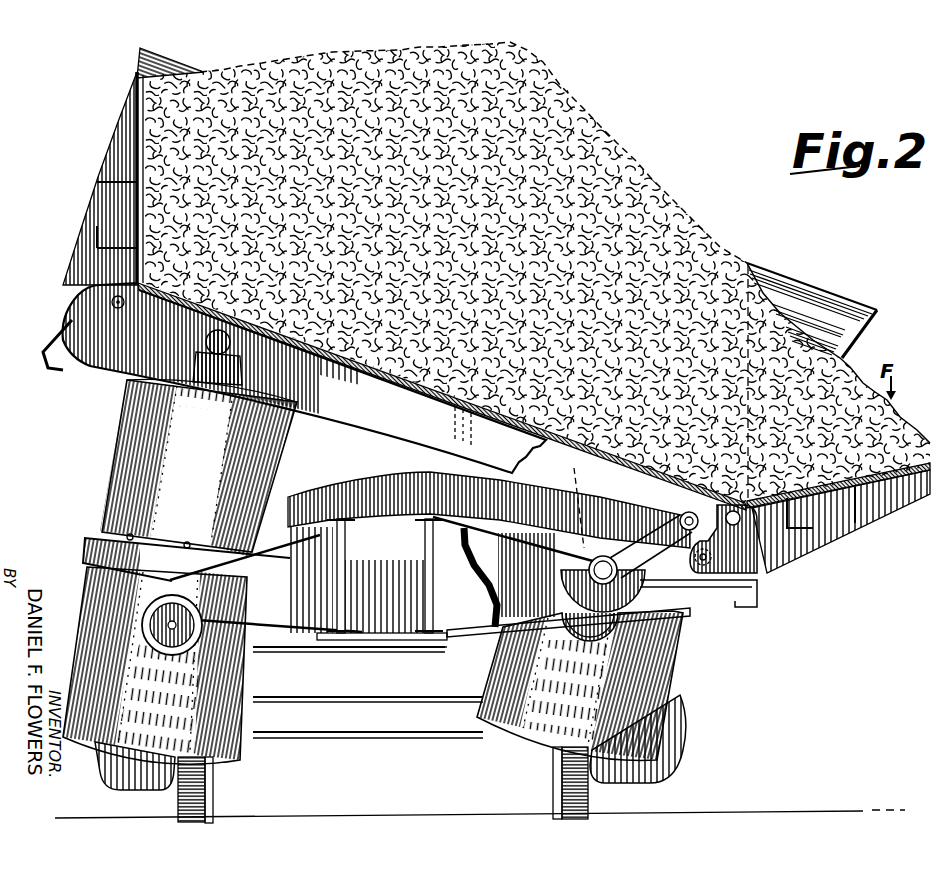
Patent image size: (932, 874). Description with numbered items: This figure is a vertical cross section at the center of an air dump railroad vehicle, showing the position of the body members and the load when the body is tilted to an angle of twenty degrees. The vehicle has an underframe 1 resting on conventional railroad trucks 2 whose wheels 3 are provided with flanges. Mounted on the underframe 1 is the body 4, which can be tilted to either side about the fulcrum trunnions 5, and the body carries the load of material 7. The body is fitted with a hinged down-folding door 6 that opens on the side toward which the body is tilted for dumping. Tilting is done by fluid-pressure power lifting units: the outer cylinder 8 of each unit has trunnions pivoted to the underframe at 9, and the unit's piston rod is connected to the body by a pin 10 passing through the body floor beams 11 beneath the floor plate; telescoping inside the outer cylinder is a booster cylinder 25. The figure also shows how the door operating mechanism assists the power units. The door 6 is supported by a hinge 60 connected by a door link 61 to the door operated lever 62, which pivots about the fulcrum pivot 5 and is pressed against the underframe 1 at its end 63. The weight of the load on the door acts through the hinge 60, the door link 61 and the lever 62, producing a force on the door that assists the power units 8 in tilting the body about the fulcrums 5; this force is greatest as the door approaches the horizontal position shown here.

The underframe 1 is at (352, 542).
The trucks 2 is at (148, 778).
The wheels 3 is at (214, 786).
The body 4 is at (837, 306).
The fulcrum trunnions 5 is at (88, 549).
The door 6 is at (96, 210).
The material 7 is at (668, 207).
The outer cylinder 8 is at (97, 586).
The trunnion pivot 9 is at (176, 602).
The pin 10 is at (215, 347).
The body floor beams 11 is at (100, 312).
The booster cylinder 25 is at (275, 450).
The hinge 60 is at (790, 548).
The door link 61 is at (692, 531).
The door operated lever 62 is at (658, 522).
The end of door operating lever 63 is at (438, 484).